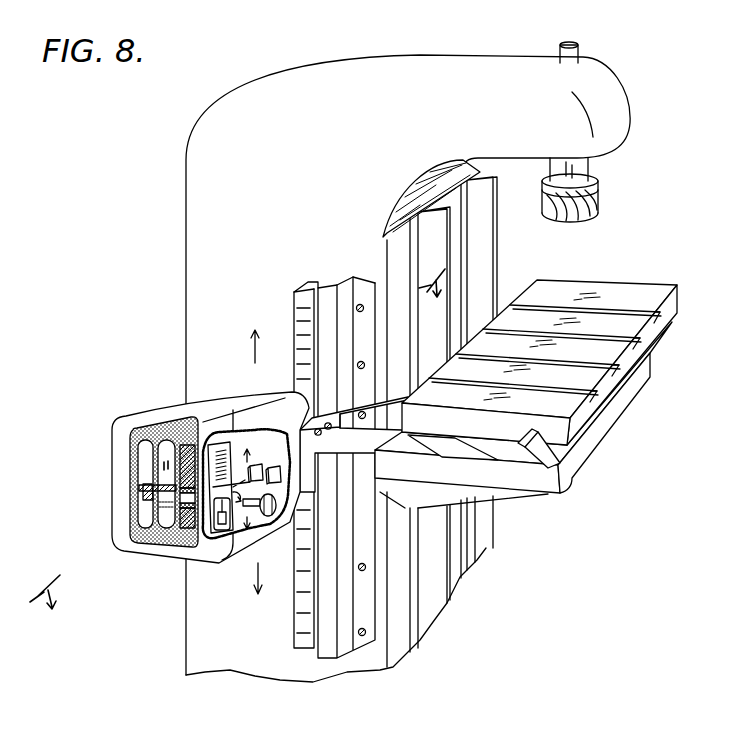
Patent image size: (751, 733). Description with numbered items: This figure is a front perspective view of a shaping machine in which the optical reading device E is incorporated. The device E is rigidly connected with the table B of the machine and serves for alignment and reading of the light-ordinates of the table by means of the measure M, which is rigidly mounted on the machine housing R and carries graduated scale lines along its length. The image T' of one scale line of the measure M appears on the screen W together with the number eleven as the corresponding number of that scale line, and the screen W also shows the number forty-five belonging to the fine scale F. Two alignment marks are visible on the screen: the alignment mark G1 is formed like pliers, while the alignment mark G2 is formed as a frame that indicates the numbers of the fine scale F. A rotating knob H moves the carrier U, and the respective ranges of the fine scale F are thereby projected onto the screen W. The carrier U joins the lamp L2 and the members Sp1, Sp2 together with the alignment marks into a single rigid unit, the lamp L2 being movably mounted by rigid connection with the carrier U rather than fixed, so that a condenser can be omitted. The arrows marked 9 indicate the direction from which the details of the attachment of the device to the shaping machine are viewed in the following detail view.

The machine housing R is at (187, 230).
The measure M is at (296, 305).
The table B is at (578, 458).
The device E is at (189, 483).
The image of a scale line T' is at (122, 484).
The alignment mark G1 is at (150, 494).
The alignment mark G2 is at (185, 528).
The screen W is at (147, 527).
The fine scale F is at (227, 447).
The member Sp1 is at (271, 467).
The member Sp2 is at (252, 465).
The rotating knob H is at (270, 515).
The carrier U is at (226, 532).
The lamp L2 is at (218, 530).
The section line of FIG. 9 is at (236, 443).